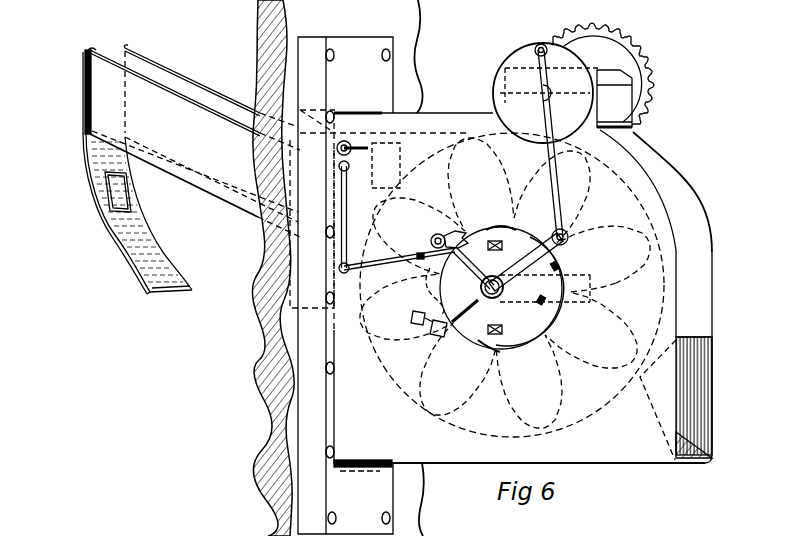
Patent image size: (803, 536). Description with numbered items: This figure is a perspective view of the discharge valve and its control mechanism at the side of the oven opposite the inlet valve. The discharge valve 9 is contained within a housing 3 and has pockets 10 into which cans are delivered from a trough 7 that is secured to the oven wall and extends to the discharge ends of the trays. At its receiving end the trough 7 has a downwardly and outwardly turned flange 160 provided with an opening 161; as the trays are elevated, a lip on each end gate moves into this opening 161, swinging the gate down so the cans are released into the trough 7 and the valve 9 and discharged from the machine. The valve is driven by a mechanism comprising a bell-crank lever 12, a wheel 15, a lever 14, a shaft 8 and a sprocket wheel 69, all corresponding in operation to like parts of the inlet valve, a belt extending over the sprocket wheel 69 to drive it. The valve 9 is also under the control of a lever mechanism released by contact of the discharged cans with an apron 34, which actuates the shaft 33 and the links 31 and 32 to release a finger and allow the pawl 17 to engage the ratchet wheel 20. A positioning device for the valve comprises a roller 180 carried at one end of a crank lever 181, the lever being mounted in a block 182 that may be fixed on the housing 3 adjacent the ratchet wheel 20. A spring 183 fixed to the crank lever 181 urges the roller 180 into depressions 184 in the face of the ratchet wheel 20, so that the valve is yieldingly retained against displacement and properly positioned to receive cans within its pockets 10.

The trough 7 is at (112, 108).
The flange 160 is at (135, 256).
The opening 161 is at (112, 194).
The housing 3 is at (712, 254).
The discharge valve 9 is at (650, 210).
The shaft 33 is at (360, 120).
The apron 34 is at (438, 118).
The pockets 10 is at (605, 251).
The ratchet wheel 20 is at (506, 228).
The lever 14 is at (547, 125).
The wheel 15 is at (572, 74).
The sprocket wheel 69 is at (648, 78).
The link 32 is at (340, 158).
The link 31 is at (355, 220).
The roller 180 is at (432, 246).
The shaft 8 is at (515, 288).
The bell-crank lever 12 is at (537, 312).
The pawl 17 is at (450, 230).
The spring 183 is at (430, 325).
The block 182 is at (418, 340).
The crank lever 181 is at (420, 291).
The depressions 184 is at (480, 338).